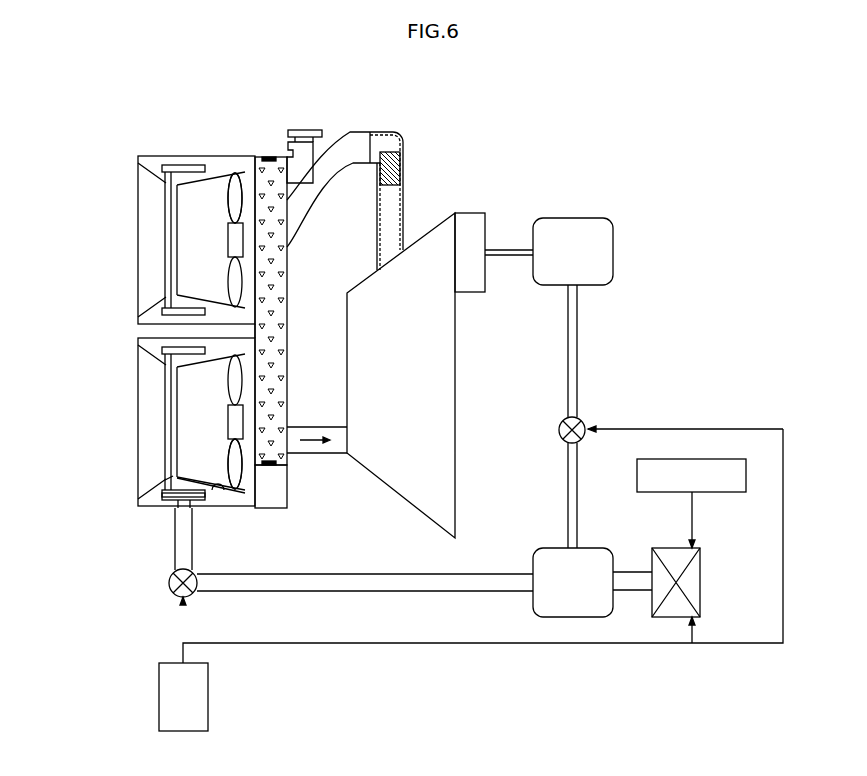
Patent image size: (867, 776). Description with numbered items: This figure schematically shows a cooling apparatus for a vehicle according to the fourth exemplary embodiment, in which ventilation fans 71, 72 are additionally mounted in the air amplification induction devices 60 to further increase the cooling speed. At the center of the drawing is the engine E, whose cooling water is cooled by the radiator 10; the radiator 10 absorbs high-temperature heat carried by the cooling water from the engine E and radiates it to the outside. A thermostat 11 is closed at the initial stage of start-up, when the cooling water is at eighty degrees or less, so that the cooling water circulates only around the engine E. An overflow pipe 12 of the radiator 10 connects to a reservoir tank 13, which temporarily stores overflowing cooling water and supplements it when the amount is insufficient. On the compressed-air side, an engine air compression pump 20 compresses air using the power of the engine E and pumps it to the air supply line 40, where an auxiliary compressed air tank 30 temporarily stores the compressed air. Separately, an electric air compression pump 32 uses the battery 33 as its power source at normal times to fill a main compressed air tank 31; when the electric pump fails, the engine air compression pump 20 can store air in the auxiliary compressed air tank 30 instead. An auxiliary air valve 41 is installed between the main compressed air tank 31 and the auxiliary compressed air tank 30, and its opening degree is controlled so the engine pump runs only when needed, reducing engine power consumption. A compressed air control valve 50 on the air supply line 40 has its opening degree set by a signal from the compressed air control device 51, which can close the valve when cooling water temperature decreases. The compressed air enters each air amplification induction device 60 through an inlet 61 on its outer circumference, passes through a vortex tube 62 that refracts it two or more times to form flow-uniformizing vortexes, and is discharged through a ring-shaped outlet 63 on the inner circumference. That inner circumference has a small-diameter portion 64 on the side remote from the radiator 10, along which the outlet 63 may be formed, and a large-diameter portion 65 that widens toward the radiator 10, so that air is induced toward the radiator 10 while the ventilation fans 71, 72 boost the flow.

The radiator 10 is at (331, 160).
The thermostat 11 is at (390, 170).
The overflow pipe 12 is at (307, 175).
The reservoir tank 13 is at (301, 132).
The engine air compression pump 20 is at (472, 223).
The auxiliary compressed air tank 30 is at (582, 227).
The main compressed air tank 31 is at (590, 563).
The electric air compression pump 32 is at (692, 587).
The battery 33 is at (693, 458).
The air supply line 40 is at (574, 357).
The auxiliary air valve 41 is at (584, 427).
The compressed air control valve 50 is at (172, 595).
The compressed air control device 51 is at (200, 695).
The air amplification induction device 60 is at (198, 321).
The inlet 61 is at (185, 505).
The vortex tube 62 is at (166, 490).
The ring-shaped outlet 63 is at (142, 497).
The small-diameter portion 64 is at (230, 490).
The large-diameter portion 65 is at (223, 493).
The ventilation fan 71 is at (233, 200).
The ventilation fan 72 is at (238, 470).
The engine E is at (432, 377).